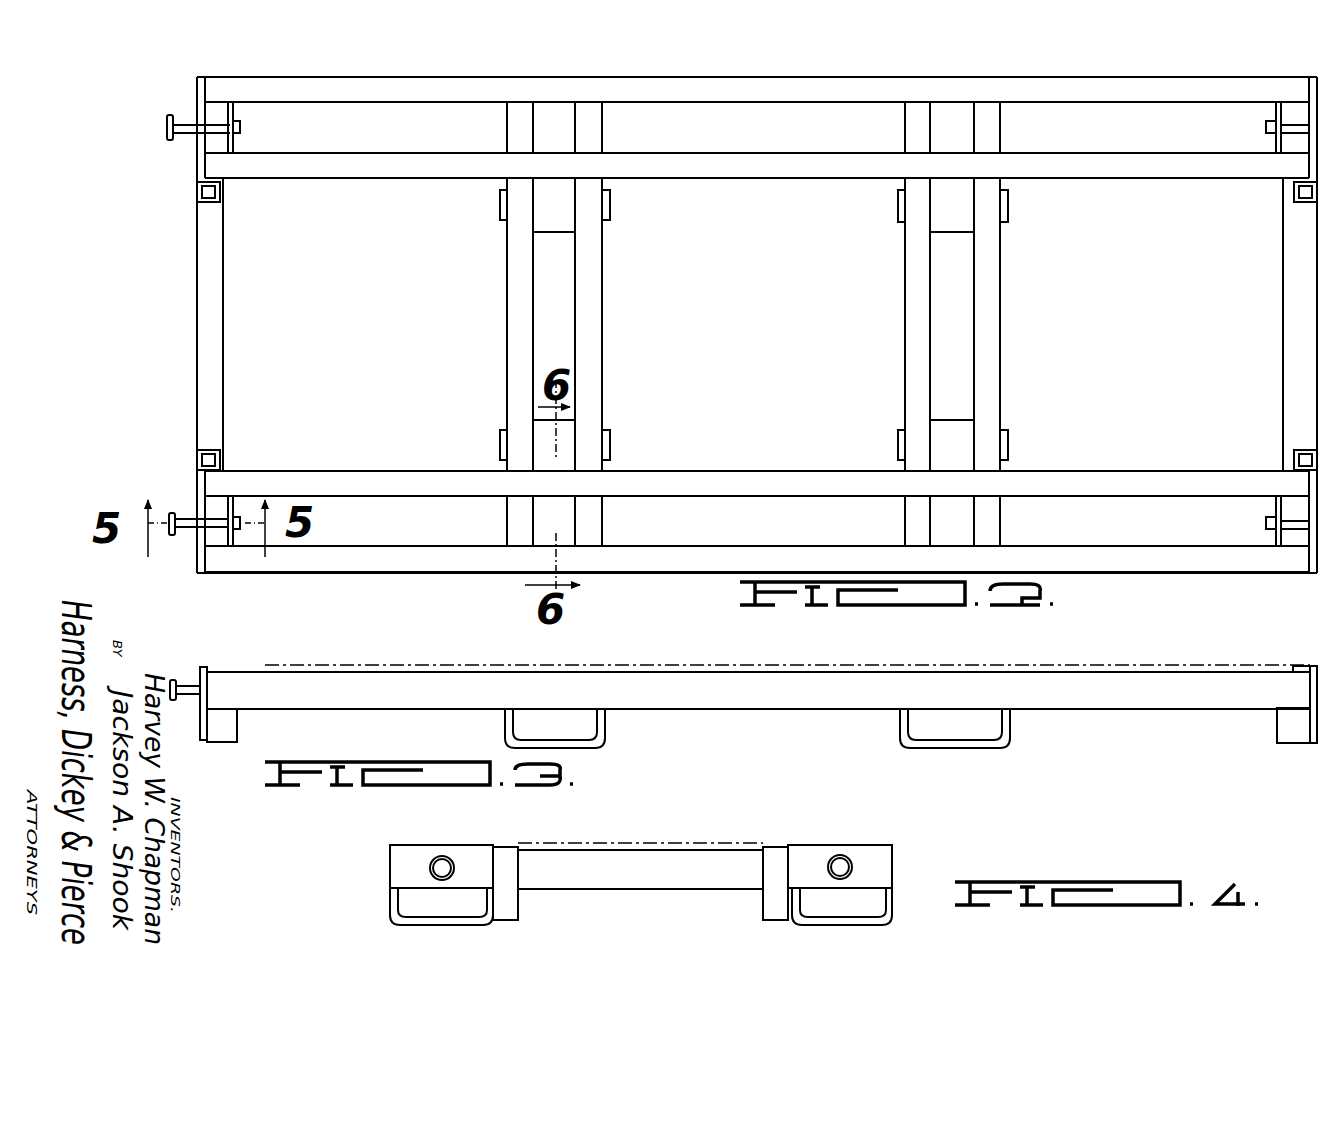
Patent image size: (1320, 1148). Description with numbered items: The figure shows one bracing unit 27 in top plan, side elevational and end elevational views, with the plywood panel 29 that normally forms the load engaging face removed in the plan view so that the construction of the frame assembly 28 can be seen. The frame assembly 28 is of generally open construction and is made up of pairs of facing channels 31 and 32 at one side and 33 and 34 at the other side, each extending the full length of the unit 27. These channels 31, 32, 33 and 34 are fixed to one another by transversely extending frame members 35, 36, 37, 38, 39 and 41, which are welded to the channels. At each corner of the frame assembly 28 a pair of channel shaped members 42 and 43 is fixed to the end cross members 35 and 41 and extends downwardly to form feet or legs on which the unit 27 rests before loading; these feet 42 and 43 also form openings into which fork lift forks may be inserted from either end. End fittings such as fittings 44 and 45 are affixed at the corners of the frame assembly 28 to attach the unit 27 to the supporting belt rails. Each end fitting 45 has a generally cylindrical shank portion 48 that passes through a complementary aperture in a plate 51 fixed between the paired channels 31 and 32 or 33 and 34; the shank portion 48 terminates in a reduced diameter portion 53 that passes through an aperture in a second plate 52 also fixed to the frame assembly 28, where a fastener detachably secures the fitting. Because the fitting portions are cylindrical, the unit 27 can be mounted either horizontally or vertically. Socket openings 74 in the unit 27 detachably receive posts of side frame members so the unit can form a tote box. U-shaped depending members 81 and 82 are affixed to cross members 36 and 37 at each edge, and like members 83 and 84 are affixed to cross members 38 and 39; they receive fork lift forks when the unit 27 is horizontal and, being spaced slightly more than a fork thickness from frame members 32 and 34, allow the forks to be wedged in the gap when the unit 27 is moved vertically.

In FIG. 2, the bracing unit 27 is at (370, 576).
In FIG. 3, the bracing unit 27 is at (637, 671).
In FIG. 4, the bracing unit 27 is at (819, 845).
In FIG. 2, the frame assembly 28 is at (195, 372).
In FIG. 3, the plywood panel 29 is at (266, 668).
In FIG. 4, the plywood panel 29 is at (692, 818).
In FIG. 2, the channel 31 is at (379, 562).
In FIG. 3, the channel 31 is at (458, 672).
In FIG. 2, the channel 32 is at (351, 489).
In FIG. 2, the channel 33 is at (336, 96).
In FIG. 2, the channel 34 is at (339, 170).
In FIG. 2, the transversely extending frame member 35 is at (223, 400).
In FIG. 4, the transversely extending frame member 35 is at (606, 890).
In FIG. 2, the transversely extending frame member 36 is at (505, 312).
In FIG. 2, the transversely extending frame member 37 is at (604, 295).
In FIG. 2, the transversely extending frame member 38 is at (903, 365).
In FIG. 2, the transversely extending frame member 39 is at (1002, 297).
In FIG. 2, the transversely extending frame member 41 is at (1281, 332).
In FIG. 3, the transversely extending frame member 41 is at (1304, 605).
In FIG. 4, the transversely extending frame member 41 is at (443, 856).
In FIG. 3, the channel shaped member 42 is at (1304, 642).
In FIG. 4, the channel shaped member 42 is at (391, 903).
In FIG. 3, the channel shaped member 43 is at (230, 727).
In FIG. 4, the channel shaped member 43 is at (869, 925).
In FIG. 2, the end fitting 44 is at (179, 118).
In FIG. 2, the end fitting 45 is at (175, 512).
In FIG. 3, the end fitting 45 is at (187, 679).
In FIG. 4, the end fitting 45 is at (857, 860).
In FIG. 2, the shank portion 48 is at (195, 540).
In FIG. 2, the plate 51 is at (196, 160).
In FIG. 3, the plate 51 is at (757, 726).
In FIG. 4, the plate 51 is at (394, 860).
In FIG. 2, the plate 52 is at (237, 128).
In FIG. 2, the reduced diameter portion 53 is at (238, 531).
In FIG. 2, the socket opening 74 is at (197, 192).
In FIG. 2, the U-shaped depending member 81 is at (500, 442).
In FIG. 3, the U-shaped depending member 81 is at (606, 728).
In FIG. 2, the U-shaped depending member 82 is at (498, 215).
In FIG. 2, the U-shaped depending member 83 is at (1010, 446).
In FIG. 3, the U-shaped depending member 83 is at (1011, 730).
In FIG. 2, the U-shaped depending member 84 is at (1010, 212).